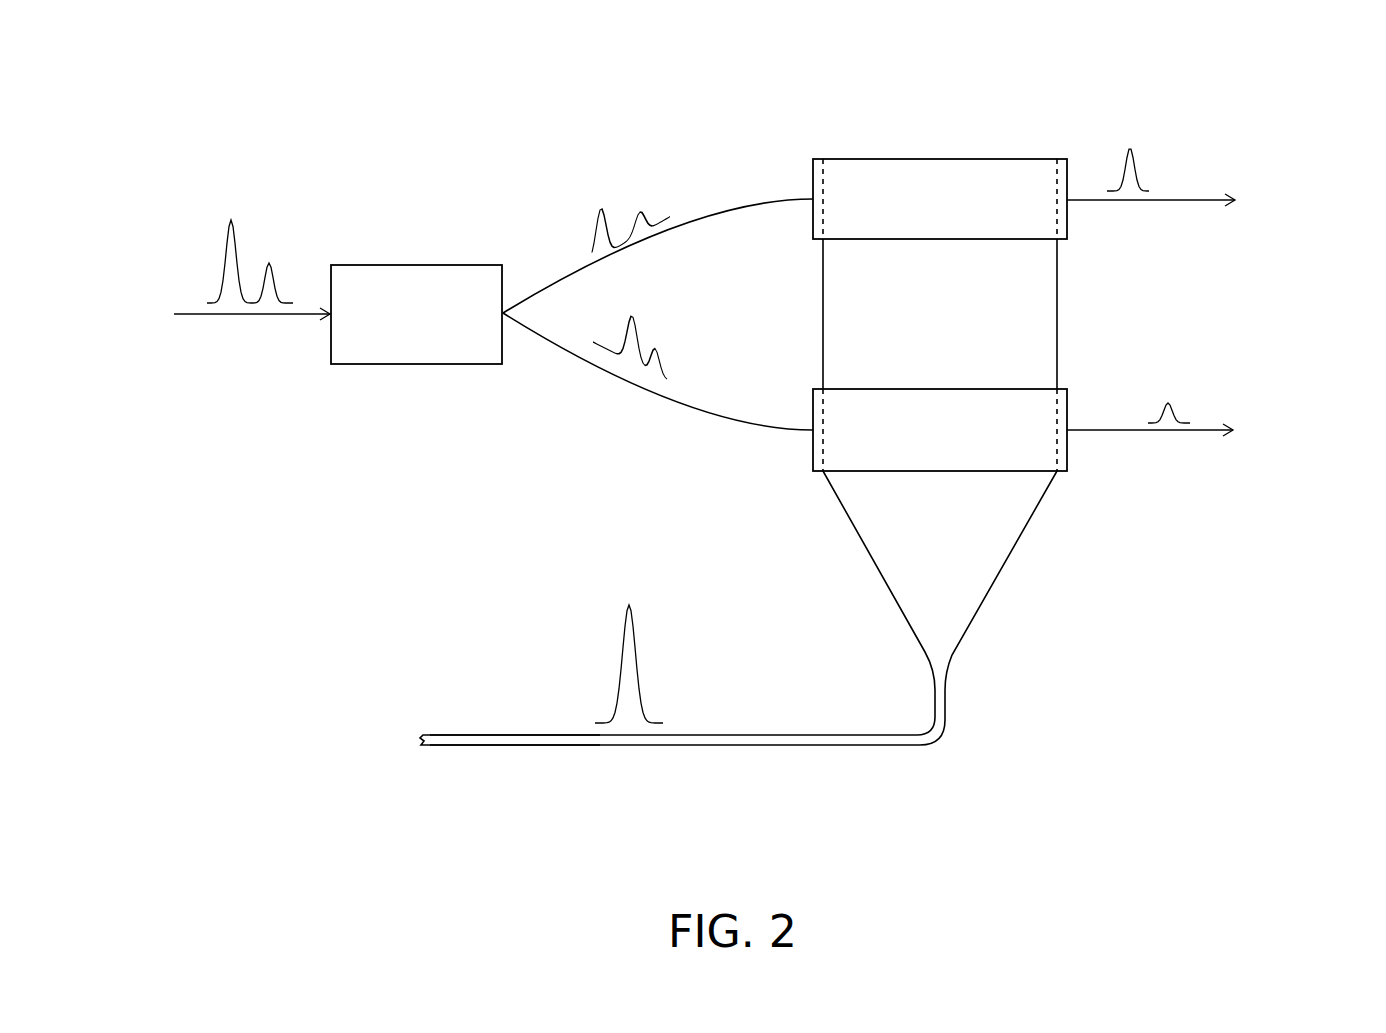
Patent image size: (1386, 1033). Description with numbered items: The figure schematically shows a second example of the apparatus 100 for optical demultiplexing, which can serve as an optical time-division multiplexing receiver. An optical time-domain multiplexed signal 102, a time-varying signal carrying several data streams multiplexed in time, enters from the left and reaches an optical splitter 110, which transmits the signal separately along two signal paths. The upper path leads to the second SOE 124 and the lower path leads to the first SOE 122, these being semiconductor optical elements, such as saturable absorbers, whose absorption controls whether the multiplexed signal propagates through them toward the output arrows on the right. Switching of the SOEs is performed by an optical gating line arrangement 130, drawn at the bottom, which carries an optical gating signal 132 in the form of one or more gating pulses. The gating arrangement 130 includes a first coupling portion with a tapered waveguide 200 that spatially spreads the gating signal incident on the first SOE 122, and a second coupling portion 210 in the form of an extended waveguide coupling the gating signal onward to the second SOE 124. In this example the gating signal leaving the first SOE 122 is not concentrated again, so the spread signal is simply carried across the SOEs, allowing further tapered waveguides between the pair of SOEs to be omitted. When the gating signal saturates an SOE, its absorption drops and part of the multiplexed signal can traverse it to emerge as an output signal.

The apparatus 100 is at (1273, 112).
The optical time-domain multiplexed signal 102 is at (205, 245).
The optical splitter 110 is at (410, 257).
The second SOE 124 is at (942, 142).
The first SOE 122 is at (1062, 478).
The second coupling portion 210 is at (840, 305).
The tapered waveguide 200 is at (843, 558).
The optical gating line arrangement 130 is at (537, 762).
The optical gating signal 132 is at (582, 663).